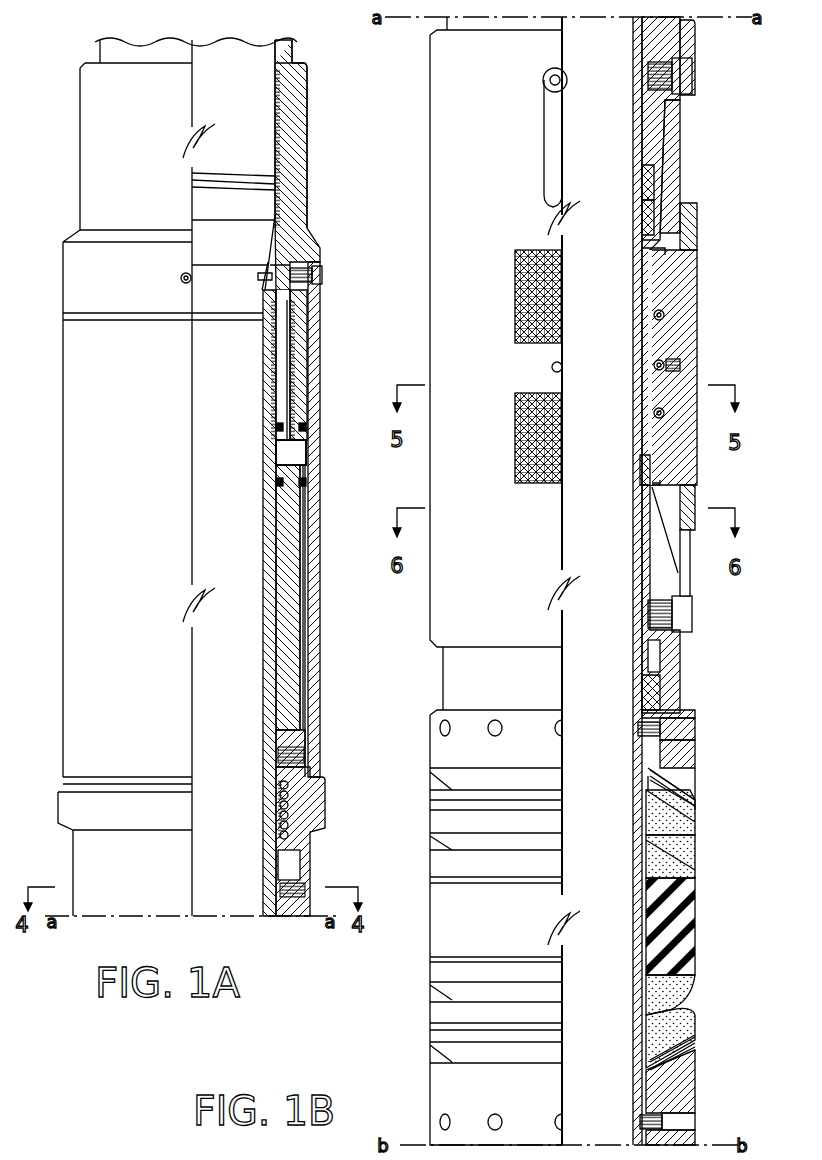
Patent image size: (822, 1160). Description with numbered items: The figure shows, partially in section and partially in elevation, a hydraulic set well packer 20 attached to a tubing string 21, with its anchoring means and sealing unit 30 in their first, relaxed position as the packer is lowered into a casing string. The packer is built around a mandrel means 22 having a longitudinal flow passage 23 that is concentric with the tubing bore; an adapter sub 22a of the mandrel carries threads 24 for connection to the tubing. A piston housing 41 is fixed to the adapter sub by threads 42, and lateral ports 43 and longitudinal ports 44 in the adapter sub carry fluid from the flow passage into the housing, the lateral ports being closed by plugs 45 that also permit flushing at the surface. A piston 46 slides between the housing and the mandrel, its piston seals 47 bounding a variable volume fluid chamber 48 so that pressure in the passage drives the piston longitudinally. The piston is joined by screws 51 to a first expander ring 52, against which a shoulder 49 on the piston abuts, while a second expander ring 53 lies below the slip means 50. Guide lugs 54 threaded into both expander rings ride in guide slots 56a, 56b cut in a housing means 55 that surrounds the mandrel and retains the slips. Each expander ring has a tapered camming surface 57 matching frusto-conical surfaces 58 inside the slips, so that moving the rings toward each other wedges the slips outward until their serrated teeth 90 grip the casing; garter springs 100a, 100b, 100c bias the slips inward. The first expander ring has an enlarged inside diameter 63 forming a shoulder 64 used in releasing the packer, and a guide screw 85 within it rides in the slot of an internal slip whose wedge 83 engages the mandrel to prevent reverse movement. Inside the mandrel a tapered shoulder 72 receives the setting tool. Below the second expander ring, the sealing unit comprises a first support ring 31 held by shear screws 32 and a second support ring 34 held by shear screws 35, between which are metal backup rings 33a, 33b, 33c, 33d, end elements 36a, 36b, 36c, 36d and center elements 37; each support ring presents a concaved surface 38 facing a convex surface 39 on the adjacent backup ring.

In FIG. 1A, the well packer 20 is at (328, 176).
In FIG. 1B, the well packer 20 is at (416, 146).
In FIG. 1A, the tubing string 21 is at (288, 48).
In FIG. 1A, the mandrel means 22 is at (292, 578).
In FIG. 1B, the mandrel means 22 is at (656, 664).
In FIG. 1A, the adapter sub 22a is at (300, 220).
In FIG. 1A, the longitudinal flow passage 23 is at (199, 657).
In FIG. 1B, the longitudinal flow passage 23 is at (582, 416).
In FIG. 1A, the threads 24 is at (298, 92).
In FIG. 1B, the sealing unit 30 is at (716, 841).
In FIG. 1B, the first support ring 31 is at (435, 747).
In FIG. 1B, the shear screws 32 is at (697, 723).
In FIG. 1B, the metal backup ring 33a is at (650, 772).
In FIG. 1B, the metal backup ring 33b is at (650, 792).
In FIG. 1B, the metal backup ring 33c is at (670, 1046).
In FIG. 1B, the metal backup ring 33d is at (656, 1062).
In FIG. 1B, the second support ring 34 is at (682, 1094).
In FIG. 1B, the shear screws 35 is at (640, 1122).
In FIG. 1B, the end element 36a is at (650, 818).
In FIG. 1B, the end element 36b is at (668, 840).
In FIG. 1B, the end element 36c is at (684, 982).
In FIG. 1B, the end element 36d is at (682, 1018).
In FIG. 1B, the center elements 37 is at (676, 910).
In FIG. 1B, the concaved surface 38 is at (690, 780).
In FIG. 1B, the convex surface 39 is at (690, 796).
In FIG. 1A, the piston housing 41 is at (318, 402).
In FIG. 1A, the threads 42 is at (318, 352).
In FIG. 1A, the lateral ports 43 is at (258, 280).
In FIG. 1A, the longitudinal ports 44 is at (296, 313).
In FIG. 1A, the plugs 45 is at (178, 277).
In FIG. 1A, the piston 46 is at (312, 630).
In FIG. 1A, the piston seals 47 is at (308, 490).
In FIG. 1A, the variable volume fluid chamber 48 is at (296, 460).
In FIG. 1A, the shoulder 49 is at (293, 742).
In FIG. 1B, the slip means 50 is at (668, 280).
In FIG. 1A, the screws 51 is at (278, 758).
In FIG. 1A, the first expander ring 52 is at (316, 808).
In FIG. 1B, the first expander ring 52 is at (667, 36).
In FIG. 1B, the second expander ring 53 is at (664, 684).
In FIG. 1B, the guide lugs 54 is at (537, 79).
In FIG. 1B, the housing means 55 is at (690, 228).
In FIG. 1B, the guide slot 56a is at (533, 160).
In FIG. 1B, the guide slot 56b is at (690, 572).
In FIG. 1B, the tapered camming surface 57 is at (670, 170).
In FIG. 1B, the frusto-conical surfaces 58 is at (648, 262).
In FIG. 1B, the enlarged inside diameter 63 is at (642, 202).
In FIG. 1B, the shoulder 64 is at (640, 176).
In FIG. 1A, the tapered shoulder 72 is at (266, 246).
In FIG. 1A, the wedge 83 is at (296, 868).
In FIG. 1A, the guide screw 85 is at (298, 900).
In FIG. 1B, the serrated teeth 90 is at (530, 380).
In FIG. 1B, the garter spring 100a is at (664, 313).
In FIG. 1B, the garter spring 100b is at (666, 362).
In FIG. 1B, the garter spring 100c is at (662, 418).